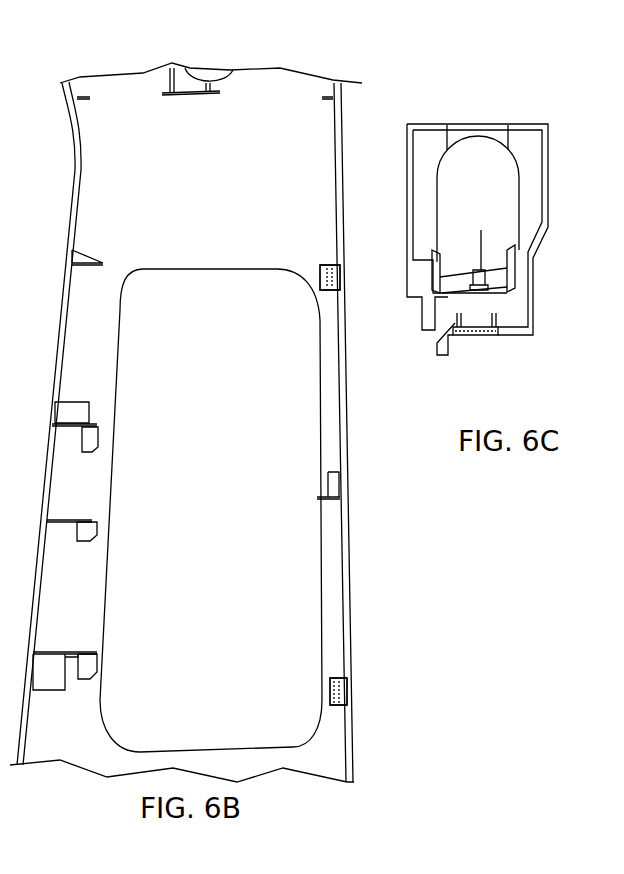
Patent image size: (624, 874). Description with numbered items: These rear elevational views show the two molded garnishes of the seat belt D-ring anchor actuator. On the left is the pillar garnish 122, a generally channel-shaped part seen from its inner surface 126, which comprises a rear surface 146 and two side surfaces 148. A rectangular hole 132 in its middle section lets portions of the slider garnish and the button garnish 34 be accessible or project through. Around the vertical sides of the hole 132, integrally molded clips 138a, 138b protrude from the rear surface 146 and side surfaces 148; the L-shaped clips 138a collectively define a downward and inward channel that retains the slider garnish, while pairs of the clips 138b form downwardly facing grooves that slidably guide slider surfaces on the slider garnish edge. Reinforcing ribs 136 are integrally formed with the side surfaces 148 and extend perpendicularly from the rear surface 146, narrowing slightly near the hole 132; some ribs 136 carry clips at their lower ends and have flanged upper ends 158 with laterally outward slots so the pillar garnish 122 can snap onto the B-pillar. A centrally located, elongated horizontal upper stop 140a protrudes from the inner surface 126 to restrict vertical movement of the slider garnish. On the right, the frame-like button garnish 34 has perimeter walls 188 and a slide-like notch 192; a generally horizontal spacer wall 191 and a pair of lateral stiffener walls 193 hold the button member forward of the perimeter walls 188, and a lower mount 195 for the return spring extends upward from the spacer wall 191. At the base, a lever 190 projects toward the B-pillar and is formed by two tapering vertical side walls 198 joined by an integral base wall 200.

In FIG. 6B, the inner surface 126 is at (110, 108).
In FIG. 6B, the rear surface 146 is at (265, 88).
In FIG. 6B, the side surfaces 148 is at (68, 320).
In FIG. 6B, the upper stop 140a is at (188, 95).
In FIG. 6B, the hole 132 is at (297, 604).
In FIG. 6B, the reinforcing ribs 136 is at (103, 262).
In FIG. 6B, the clips 138a is at (88, 437).
In FIG. 6B, the clips 138b is at (333, 277).
In FIG. 6B, the flanged upper ends 158 is at (72, 407).
In FIG. 6B, the pillar garnish 122 is at (358, 732).
In FIG. 6C, the button garnish 34 is at (527, 148).
In FIG. 6C, the perimeter walls 188 is at (549, 226).
In FIG. 6C, the slide-like notch 192 is at (498, 135).
In FIG. 6C, the lower mount 195 is at (480, 228).
In FIG. 6C, the lateral stiffener walls 193 is at (441, 250).
In FIG. 6C, the spacer wall 191 is at (507, 268).
In FIG. 6C, the lever 190 is at (500, 326).
In FIG. 6C, the vertical side walls 198 is at (438, 337).
In FIG. 6C, the base wall 200 is at (475, 335).